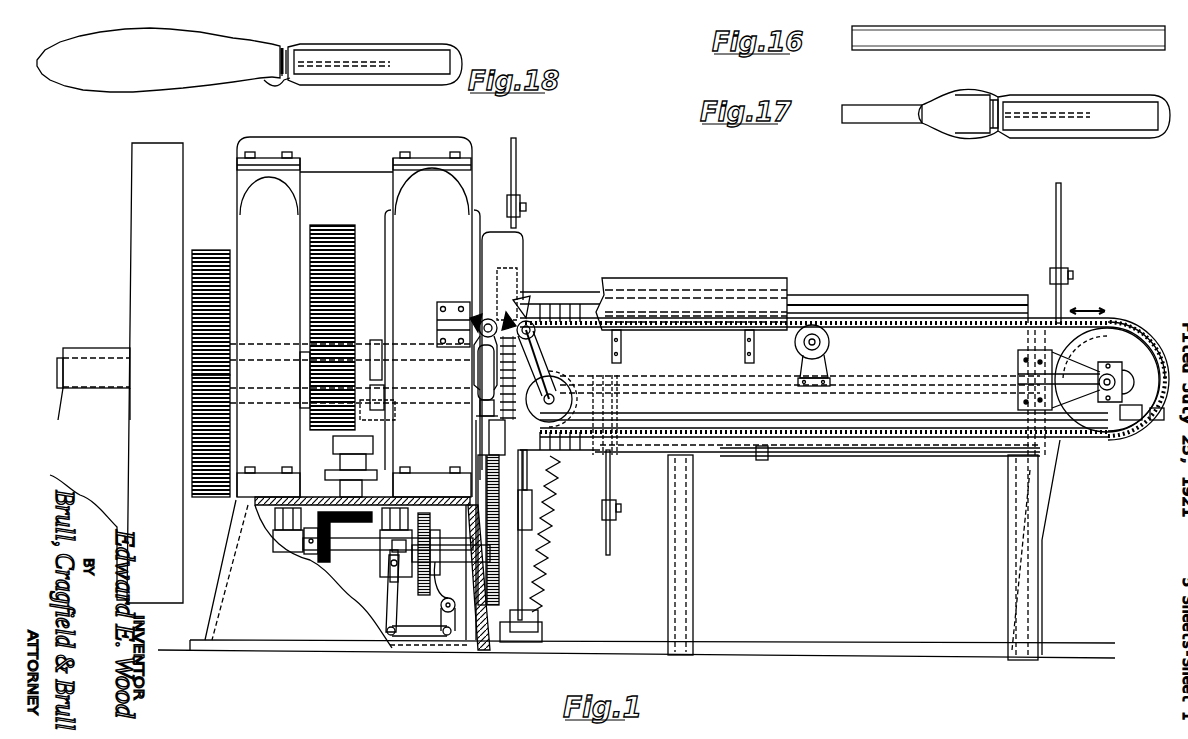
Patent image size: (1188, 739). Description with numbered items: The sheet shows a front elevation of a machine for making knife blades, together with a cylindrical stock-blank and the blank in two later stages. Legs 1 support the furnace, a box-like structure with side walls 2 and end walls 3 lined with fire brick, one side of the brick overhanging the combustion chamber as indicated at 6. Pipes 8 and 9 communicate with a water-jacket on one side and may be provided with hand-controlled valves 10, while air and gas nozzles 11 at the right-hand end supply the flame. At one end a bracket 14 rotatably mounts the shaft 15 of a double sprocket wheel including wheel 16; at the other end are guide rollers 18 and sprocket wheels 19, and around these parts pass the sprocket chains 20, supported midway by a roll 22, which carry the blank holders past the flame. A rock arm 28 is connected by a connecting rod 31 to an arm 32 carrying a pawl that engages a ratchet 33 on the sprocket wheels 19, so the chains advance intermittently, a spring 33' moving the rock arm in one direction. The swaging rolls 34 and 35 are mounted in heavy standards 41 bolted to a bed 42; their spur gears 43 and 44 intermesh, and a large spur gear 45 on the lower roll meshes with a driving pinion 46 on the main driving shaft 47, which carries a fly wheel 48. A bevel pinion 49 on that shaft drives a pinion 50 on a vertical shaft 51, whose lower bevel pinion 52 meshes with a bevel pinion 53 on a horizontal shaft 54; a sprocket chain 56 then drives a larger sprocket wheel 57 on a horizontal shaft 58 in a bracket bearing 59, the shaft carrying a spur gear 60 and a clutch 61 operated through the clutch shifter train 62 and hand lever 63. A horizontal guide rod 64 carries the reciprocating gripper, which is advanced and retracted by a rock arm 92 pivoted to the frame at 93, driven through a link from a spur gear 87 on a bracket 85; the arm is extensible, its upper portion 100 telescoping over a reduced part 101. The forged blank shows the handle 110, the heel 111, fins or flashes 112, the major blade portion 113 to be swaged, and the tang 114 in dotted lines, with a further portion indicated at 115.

In FIG. 1, the legs 1 is at (672, 581).
In FIG. 1, the side walls 2 is at (800, 374).
In FIG. 1, the end walls 3 is at (514, 301).
In FIG. 1, the overhanging fire brick 6 is at (890, 306).
In FIG. 1, the pipe 8 is at (608, 559).
In FIG. 1, the pipe 9 is at (1058, 243).
In FIG. 1, the hand-controlled valves 10 is at (617, 513).
In FIG. 1, the air and gas nozzles 11 is at (1152, 417).
In FIG. 1, the bracket 14 is at (1082, 373).
In FIG. 1, the shaft 15 is at (1120, 377).
In FIG. 1, the sprocket wheel 16 is at (1140, 353).
In FIG. 1, the guide rollers 18 is at (532, 300).
In FIG. 1, the sprocket wheels 19 is at (558, 380).
In FIG. 1, the sprocket chain 20 is at (870, 326).
In FIG. 1, the supporting roll 22 is at (795, 345).
In FIG. 1, the rock arm 28 is at (530, 613).
In FIG. 1, the connecting rod 31 is at (524, 563).
In FIG. 1, the arm 32 is at (560, 453).
In FIG. 1, the ratchet 33 is at (540, 378).
In FIG. 1, the spring 33' is at (555, 534).
In FIG. 1, the swaging roll 34 is at (523, 250).
In FIG. 1, the swaging roll 35 is at (507, 250).
In FIG. 1, the uprights or standards 41 is at (358, 324).
In FIG. 1, the bed 42 is at (340, 573).
In FIG. 1, the spur gear 43 is at (334, 224).
In FIG. 1, the spur gear 44 is at (367, 375).
In FIG. 1, the large spur gear 45 is at (218, 496).
In FIG. 1, the driving pinion 46 is at (200, 345).
In FIG. 1, the main driving shaft 47 is at (126, 366).
In FIG. 1, the fly wheel 48 is at (142, 297).
In FIG. 1, the bevel pinion 49 is at (302, 373).
In FIG. 1, the horizontally rotatable pinion 50 is at (380, 410).
In FIG. 1, the vertical shaft 51 is at (348, 466).
In FIG. 1, the bevel pinion 52 is at (345, 528).
In FIG. 1, the bevel pinion 53 is at (292, 552).
In FIG. 1, the horizontal shaft 54 is at (368, 548).
In FIG. 1, the sprocket chain 56 is at (419, 547).
In FIG. 1, the sprocket wheel 57 is at (428, 572).
In FIG. 1, the horizontal shaft 58 is at (476, 566).
In FIG. 1, the bracket bearing 59 is at (454, 587).
In FIG. 1, the spur gear 60 is at (457, 620).
In FIG. 1, the clutch 61 is at (396, 560).
In FIG. 1, the clutch shifter train 62 is at (392, 614).
In FIG. 1, the hand lever 63 is at (1046, 499).
In FIG. 1, the guide rod 64 is at (476, 363).
In FIG. 1, the bracket 85 is at (486, 471).
In FIG. 1, the spur gear 87 is at (480, 488).
In FIG. 1, the rock arm 92 is at (560, 466).
In FIG. 1, the pivot 93 is at (508, 645).
In FIG. 1, the upper portion 100 is at (480, 379).
In FIG. 1, the reduced part 101 is at (482, 405).
In FIG. 18, the handle 110 is at (413, 58).
In FIG. 17, the handle 110 is at (1098, 94).
In FIG. 18, the heel of the blade 111 is at (288, 48).
In FIG. 17, the heel of the blade 111 is at (982, 130).
In FIG. 18, the fins or flashes 112 is at (305, 77).
In FIG. 17, the fins or flashes 112 is at (980, 100).
In FIG. 18, the major blade portion 113 is at (154, 60).
In FIG. 17, the major blade portion 113 is at (893, 118).
In FIG. 18, the tang 114 is at (342, 60).
In FIG. 17, the tang 114 is at (1040, 118).
In FIG. 17, the bolster 115 is at (912, 120).